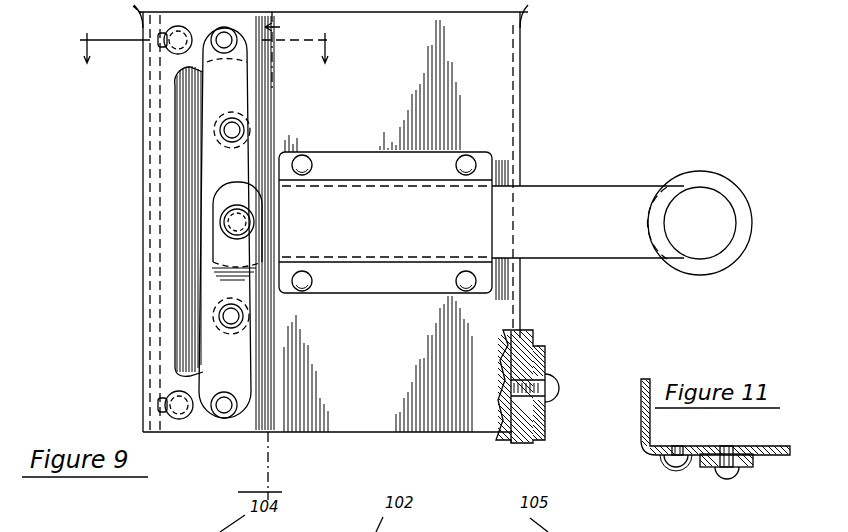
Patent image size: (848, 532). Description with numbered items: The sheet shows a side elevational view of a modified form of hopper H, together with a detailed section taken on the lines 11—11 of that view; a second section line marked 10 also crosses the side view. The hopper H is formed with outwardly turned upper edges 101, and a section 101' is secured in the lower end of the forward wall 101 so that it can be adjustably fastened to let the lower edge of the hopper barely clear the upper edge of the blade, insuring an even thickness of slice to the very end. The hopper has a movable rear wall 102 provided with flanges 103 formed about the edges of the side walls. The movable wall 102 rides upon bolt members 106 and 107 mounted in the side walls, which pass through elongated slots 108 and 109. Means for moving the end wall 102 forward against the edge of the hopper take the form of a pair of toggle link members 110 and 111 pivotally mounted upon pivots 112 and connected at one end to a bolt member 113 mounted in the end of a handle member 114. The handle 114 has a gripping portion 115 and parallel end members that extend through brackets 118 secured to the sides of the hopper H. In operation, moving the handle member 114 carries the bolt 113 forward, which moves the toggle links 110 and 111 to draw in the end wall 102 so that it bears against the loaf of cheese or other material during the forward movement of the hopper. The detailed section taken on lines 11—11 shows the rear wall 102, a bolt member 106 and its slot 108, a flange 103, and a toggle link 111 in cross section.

In FIG. 9, the outwardly turned upper edges 101 is at (342, 218).
In FIG. 9, the section 101' is at (514, 400).
In FIG. 9, the movable rear wall 102 is at (147, 209).
In FIG. 11, the movable rear wall 102 is at (641, 395).
In FIG. 9, the flanges 103 is at (165, 288).
In FIG. 11, the flanges 103 is at (713, 468).
In FIG. 9, the bolt member 106 is at (183, 48).
In FIG. 11, the bolt member 106 is at (680, 466).
In FIG. 9, the bolt member 107 is at (178, 405).
In FIG. 9, the elongated slot 108 is at (158, 44).
In FIG. 11, the elongated slot 108 is at (656, 456).
In FIG. 9, the elongated slot 109 is at (160, 402).
In FIG. 9, the toggle link member 110 is at (220, 348).
In FIG. 9, the toggle link member 111 is at (215, 103).
In FIG. 11, the toggle link member 111 is at (742, 462).
In FIG. 9, the pivots 112 is at (235, 130).
In FIG. 9, the bolt member 113 is at (240, 224).
In FIG. 9, the handle member 114 is at (610, 200).
In FIG. 9, the gripping portion 115 is at (695, 262).
In FIG. 9, the brackets 118 is at (385, 283).
In FIG. 9, the hopper H is at (500, 83).
In FIG. 9, the section line 10 is at (256, 258).
In FIG. 9, the section line 11— 11 is at (206, 58).